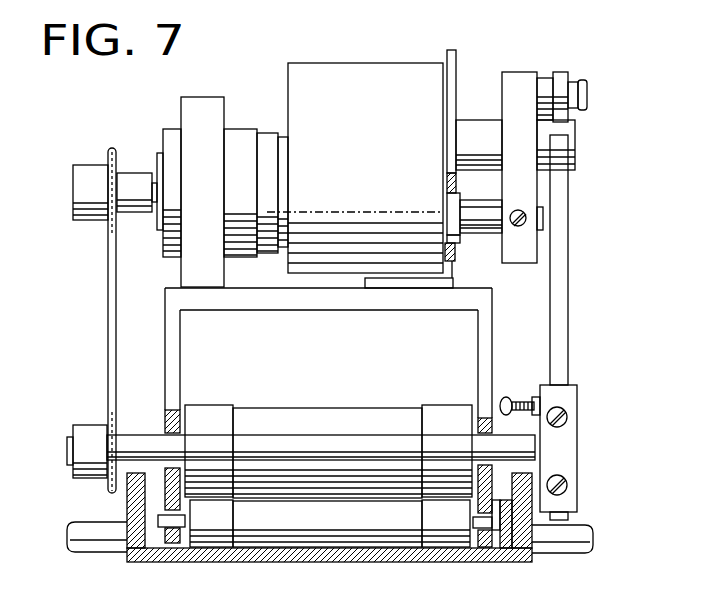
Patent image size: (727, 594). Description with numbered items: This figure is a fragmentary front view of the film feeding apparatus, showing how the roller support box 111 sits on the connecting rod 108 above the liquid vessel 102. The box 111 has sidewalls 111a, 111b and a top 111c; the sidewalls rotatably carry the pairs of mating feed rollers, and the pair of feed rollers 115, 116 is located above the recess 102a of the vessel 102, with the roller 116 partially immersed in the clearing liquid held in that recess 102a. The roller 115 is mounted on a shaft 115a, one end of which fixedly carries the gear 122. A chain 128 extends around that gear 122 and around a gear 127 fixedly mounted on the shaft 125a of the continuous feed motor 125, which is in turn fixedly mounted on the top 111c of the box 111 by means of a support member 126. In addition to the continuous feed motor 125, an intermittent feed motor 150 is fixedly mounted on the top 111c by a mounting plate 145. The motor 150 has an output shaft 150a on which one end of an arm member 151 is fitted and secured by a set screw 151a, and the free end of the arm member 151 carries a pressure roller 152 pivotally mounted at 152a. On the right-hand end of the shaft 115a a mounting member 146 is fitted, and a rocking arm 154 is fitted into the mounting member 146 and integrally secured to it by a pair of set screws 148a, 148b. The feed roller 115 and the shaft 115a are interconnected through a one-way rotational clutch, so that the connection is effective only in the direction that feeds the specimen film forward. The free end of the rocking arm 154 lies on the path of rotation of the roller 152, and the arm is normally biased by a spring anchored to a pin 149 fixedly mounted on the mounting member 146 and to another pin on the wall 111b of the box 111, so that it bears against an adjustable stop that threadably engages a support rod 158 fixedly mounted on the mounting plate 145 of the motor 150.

The liquid vessel 102 is at (213, 553).
The recess 102a is at (497, 537).
The connecting rod 108 is at (83, 525).
The roller support box 111 is at (267, 417).
The sidewall 111a is at (176, 366).
The sidewall 111b is at (480, 333).
The top 111c is at (300, 309).
The feed roller 115 is at (453, 409).
The shaft 115a is at (530, 447).
The feed roller 116 is at (313, 530).
The gear 122 is at (108, 413).
The continuous feed motor 125 is at (172, 132).
The shaft 125a is at (153, 182).
The support member 126 is at (215, 118).
The gear 127 is at (107, 157).
The chain 128 is at (108, 300).
The mounting plate 145 is at (473, 50).
The mounting member 146 is at (572, 472).
The set screw 148a is at (567, 408).
The set screw 148b is at (555, 468).
The pin 149 is at (513, 398).
The intermittent feed motor 150 is at (378, 72).
The output shaft 150a is at (473, 227).
The arm member 151 is at (528, 193).
The set screw 151a is at (525, 227).
The pressure roller 152 is at (558, 73).
The pivot 152a is at (577, 80).
The rocking arm 154 is at (562, 328).
The support rod 158 is at (487, 125).